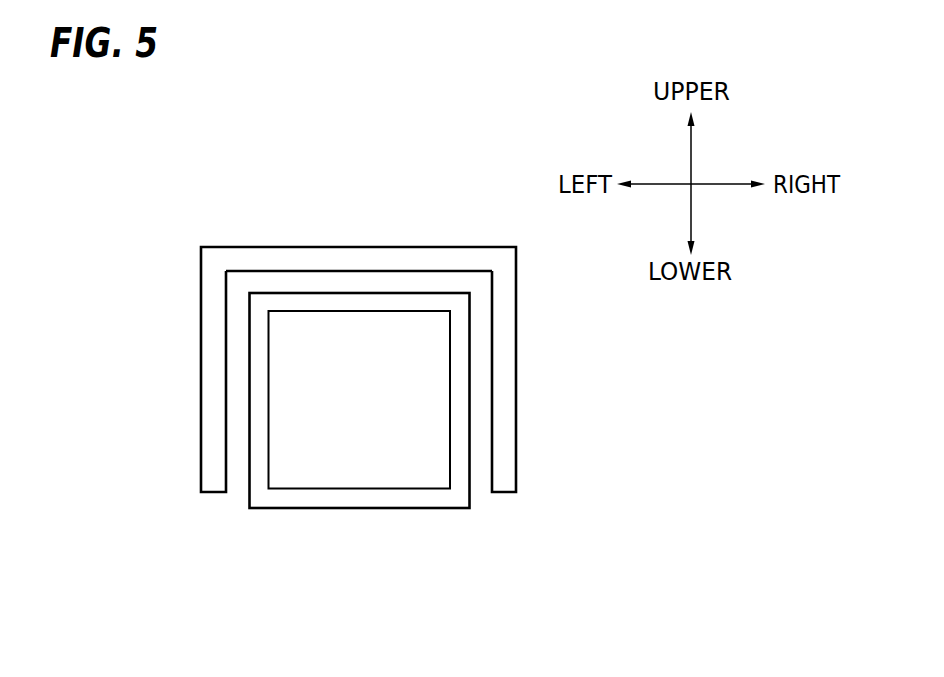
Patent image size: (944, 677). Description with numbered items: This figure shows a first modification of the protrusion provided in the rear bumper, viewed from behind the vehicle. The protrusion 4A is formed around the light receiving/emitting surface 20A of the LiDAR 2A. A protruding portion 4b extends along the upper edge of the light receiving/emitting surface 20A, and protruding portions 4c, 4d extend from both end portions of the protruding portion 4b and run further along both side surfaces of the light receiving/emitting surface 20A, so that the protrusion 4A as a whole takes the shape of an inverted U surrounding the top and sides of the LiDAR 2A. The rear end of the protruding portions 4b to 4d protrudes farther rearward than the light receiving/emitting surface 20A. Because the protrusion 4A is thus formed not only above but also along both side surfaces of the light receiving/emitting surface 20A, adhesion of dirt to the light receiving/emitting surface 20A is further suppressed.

The protrusion 4A is at (357, 328).
The protruding portion 4b is at (387, 258).
The protruding portion 4c is at (213, 370).
The protruding portion 4d is at (505, 353).
The LiDAR 2A is at (360, 443).
The light receiving/emitting surface 20A is at (320, 460).